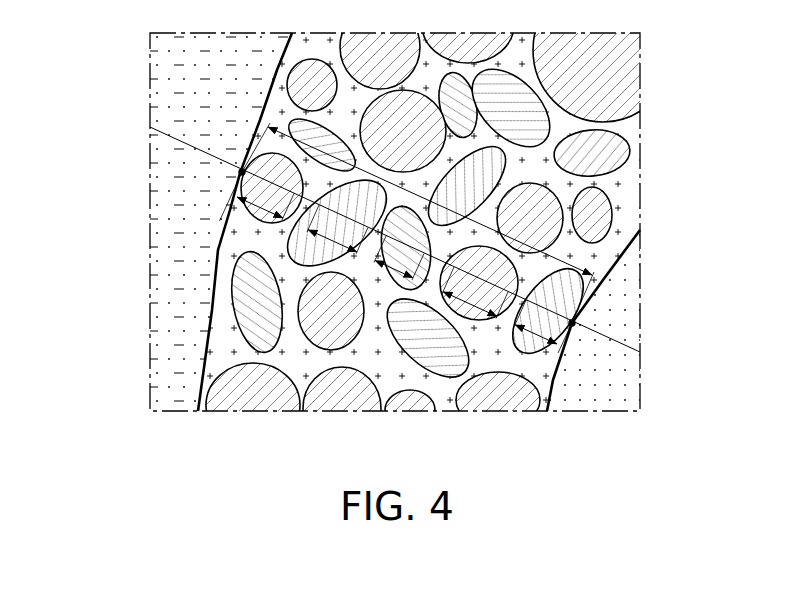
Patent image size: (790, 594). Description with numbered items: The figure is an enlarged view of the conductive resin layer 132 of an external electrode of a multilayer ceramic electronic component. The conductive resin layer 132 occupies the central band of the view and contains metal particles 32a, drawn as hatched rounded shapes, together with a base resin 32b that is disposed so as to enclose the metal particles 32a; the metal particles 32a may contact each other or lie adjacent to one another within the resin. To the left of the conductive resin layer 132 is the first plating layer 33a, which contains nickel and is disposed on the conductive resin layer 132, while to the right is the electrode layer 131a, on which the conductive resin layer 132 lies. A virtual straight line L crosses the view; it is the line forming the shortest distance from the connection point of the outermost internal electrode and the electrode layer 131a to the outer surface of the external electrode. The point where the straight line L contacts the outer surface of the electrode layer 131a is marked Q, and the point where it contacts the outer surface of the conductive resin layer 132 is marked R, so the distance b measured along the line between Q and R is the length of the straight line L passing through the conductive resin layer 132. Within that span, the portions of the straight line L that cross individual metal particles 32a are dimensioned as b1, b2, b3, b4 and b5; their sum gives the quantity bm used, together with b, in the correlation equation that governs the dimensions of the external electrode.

The first plating layer 33a is at (166, 69).
The electrode layer 131a is at (618, 306).
The conductive resin layer 132 is at (215, 253).
The metal particles 32a is at (244, 297).
The base resin 32b is at (245, 344).
The virtual straight line L is at (214, 155).
The point R is at (231, 177).
The point Q is at (578, 337).
The distance b is at (407, 238).
The distance b1 is at (265, 203).
The distance b2 is at (337, 229).
The distance b3 is at (399, 258).
The distance b4 is at (475, 293).
The distance b5 is at (535, 322).